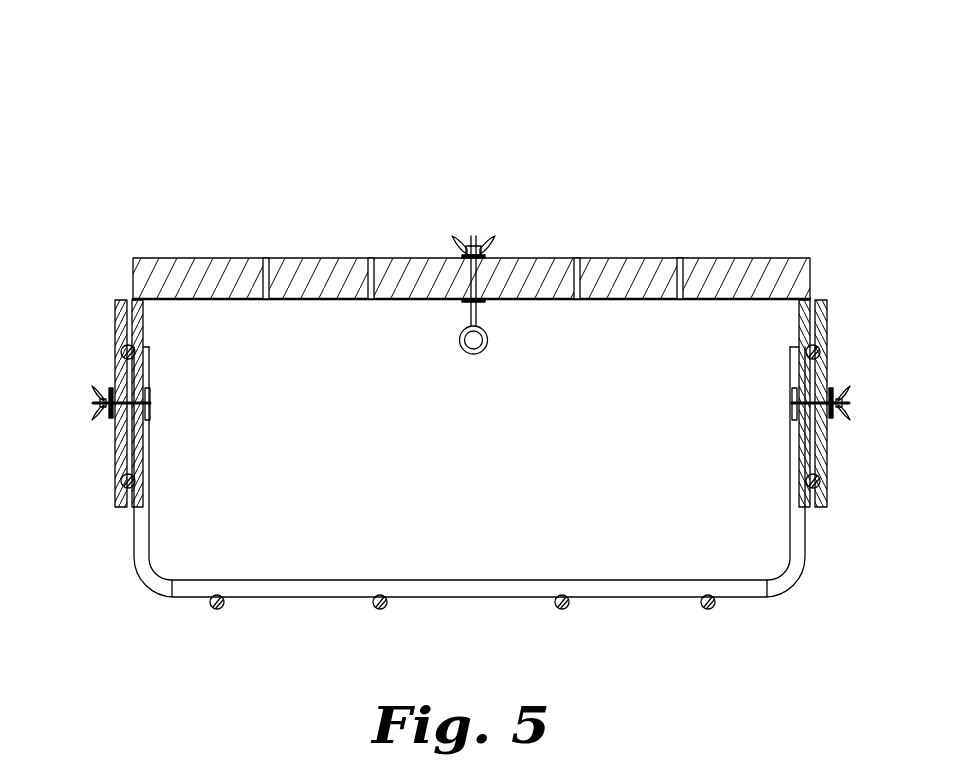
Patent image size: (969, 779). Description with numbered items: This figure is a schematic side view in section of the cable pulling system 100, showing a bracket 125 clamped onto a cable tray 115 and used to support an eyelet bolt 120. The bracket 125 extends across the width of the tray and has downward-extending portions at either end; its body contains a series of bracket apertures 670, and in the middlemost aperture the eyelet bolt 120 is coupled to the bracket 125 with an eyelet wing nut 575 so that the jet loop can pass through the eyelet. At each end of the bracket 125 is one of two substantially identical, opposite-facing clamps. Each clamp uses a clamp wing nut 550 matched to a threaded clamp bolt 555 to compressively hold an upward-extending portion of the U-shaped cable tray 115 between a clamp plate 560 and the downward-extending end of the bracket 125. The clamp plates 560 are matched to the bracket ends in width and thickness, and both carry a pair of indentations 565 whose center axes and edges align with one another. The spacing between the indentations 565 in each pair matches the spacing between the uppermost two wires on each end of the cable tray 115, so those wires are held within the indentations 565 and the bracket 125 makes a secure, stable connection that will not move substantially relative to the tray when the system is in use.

The grill/tray assembly 100 is at (217, 92).
The cable tray 115 is at (640, 598).
The eyelet bolt 120 is at (487, 346).
The bracket 125 is at (200, 258).
The clamp wing nut 550 is at (96, 395).
The threaded clamp bolt 555 is at (150, 405).
The clamp plate 560 is at (124, 298).
The indentation 565 is at (120, 345).
The eyelet wing nut 575 is at (478, 238).
The bracket aperture 670 is at (372, 248).